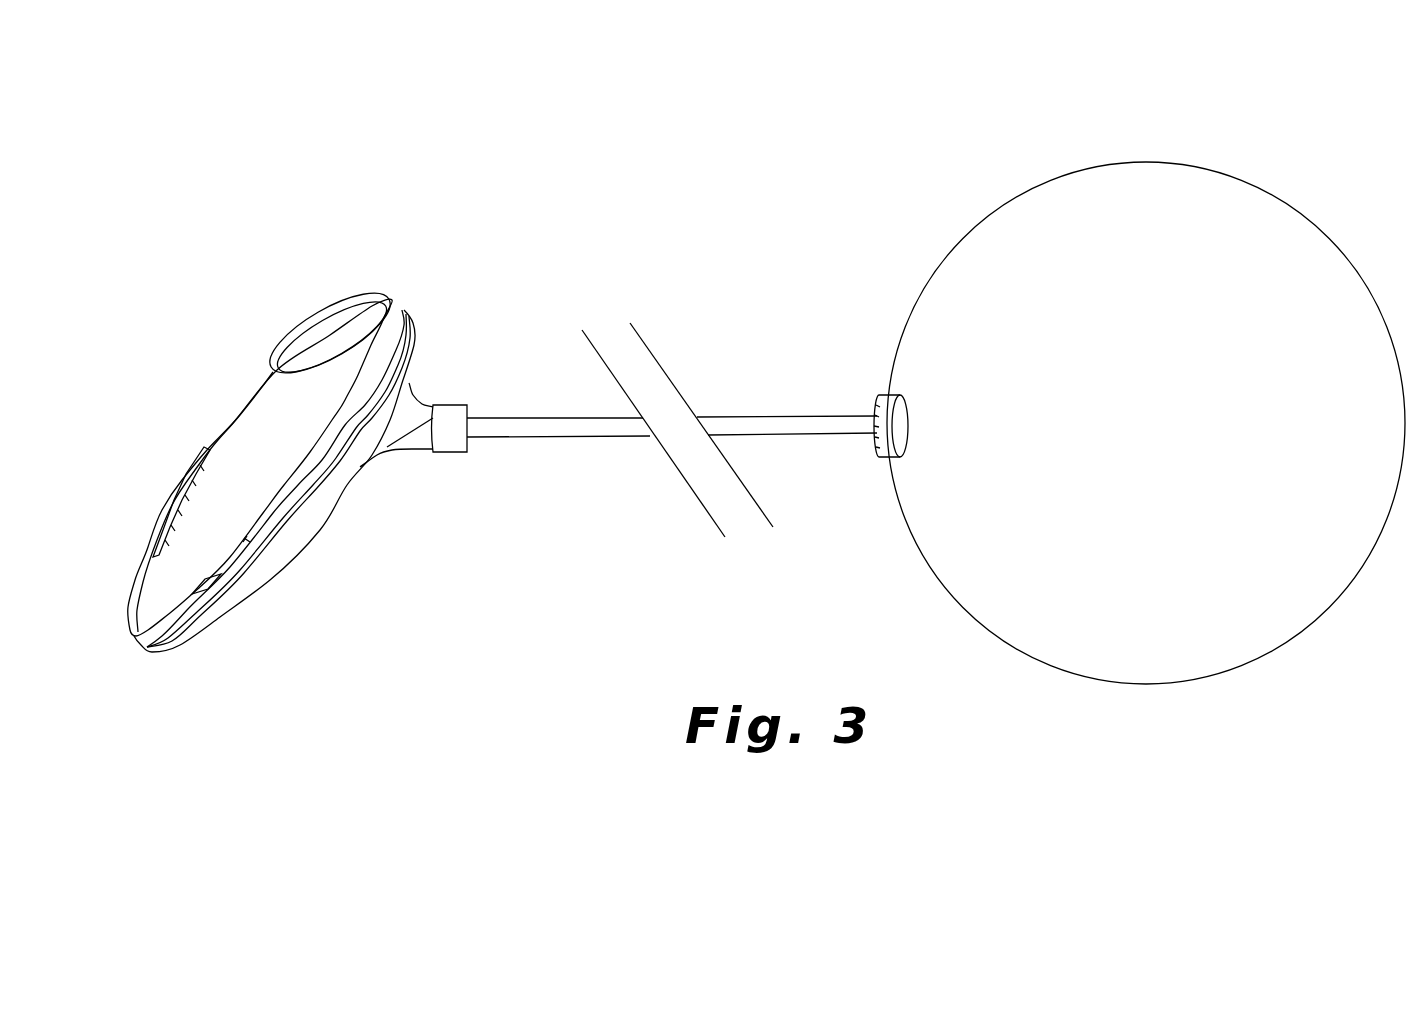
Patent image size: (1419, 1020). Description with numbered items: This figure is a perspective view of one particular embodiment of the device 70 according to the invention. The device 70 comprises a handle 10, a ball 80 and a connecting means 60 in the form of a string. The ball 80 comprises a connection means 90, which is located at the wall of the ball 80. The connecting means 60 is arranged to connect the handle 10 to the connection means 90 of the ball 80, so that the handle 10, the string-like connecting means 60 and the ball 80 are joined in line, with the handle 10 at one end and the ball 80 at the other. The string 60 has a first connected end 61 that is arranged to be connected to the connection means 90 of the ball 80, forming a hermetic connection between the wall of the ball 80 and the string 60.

The handle 10 is at (221, 655).
The connecting means 60 is at (768, 427).
The first connected end 61 is at (875, 447).
The device 70 is at (536, 190).
The ball 80 is at (1067, 228).
The connection means 90 is at (892, 390).